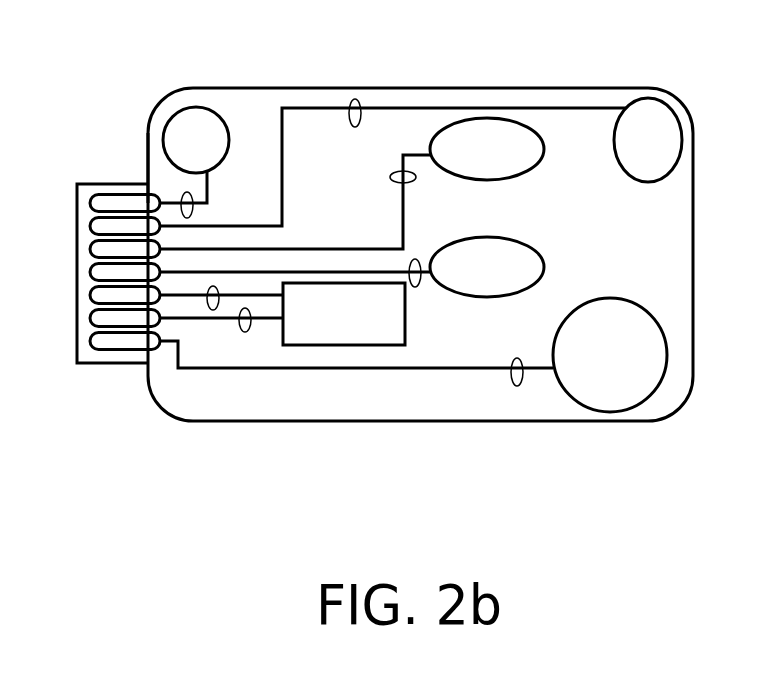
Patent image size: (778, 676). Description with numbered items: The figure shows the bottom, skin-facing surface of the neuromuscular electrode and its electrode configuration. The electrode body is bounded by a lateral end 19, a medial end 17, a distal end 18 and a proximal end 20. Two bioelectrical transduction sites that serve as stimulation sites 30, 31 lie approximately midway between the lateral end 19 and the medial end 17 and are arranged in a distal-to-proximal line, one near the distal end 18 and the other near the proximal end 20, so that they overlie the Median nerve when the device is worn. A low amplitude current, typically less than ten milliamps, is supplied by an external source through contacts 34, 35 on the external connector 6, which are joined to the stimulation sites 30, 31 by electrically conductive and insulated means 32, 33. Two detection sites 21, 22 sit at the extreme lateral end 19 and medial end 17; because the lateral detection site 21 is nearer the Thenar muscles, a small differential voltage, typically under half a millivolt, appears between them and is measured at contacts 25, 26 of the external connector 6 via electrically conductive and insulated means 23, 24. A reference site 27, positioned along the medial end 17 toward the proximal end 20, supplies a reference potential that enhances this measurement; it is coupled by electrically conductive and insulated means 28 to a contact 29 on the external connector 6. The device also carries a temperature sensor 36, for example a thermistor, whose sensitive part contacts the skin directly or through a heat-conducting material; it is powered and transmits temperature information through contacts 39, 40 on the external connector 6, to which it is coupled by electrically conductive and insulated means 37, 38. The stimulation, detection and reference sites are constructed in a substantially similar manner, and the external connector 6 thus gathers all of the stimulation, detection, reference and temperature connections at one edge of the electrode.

The external connector 6 is at (115, 363).
The medial end 17 is at (693, 280).
The distal end 18 is at (458, 88).
The lateral end 19 is at (148, 175).
The proximal end 20 is at (418, 422).
The lateral detection site 21 is at (178, 112).
The medial detection site 22 is at (682, 140).
The electrically conductive and insulated means 23 is at (183, 192).
The electrically conductive and insulated means 24 is at (353, 99).
The contact 25 is at (90, 200).
The contact 26 is at (90, 224).
The reference site 27 is at (667, 358).
The electrically conductive and insulated means 28 is at (520, 358).
The contact 29 is at (90, 343).
The stimulation site 30 is at (525, 177).
The stimulation site 31 is at (528, 240).
The electrically conductive and insulated means 32 is at (390, 177).
The electrically conductive and insulated means 33 is at (417, 287).
The contact 34 is at (90, 248).
The contact 35 is at (90, 272).
The temperature sensor 36 is at (325, 345).
The electrically conductive and insulated means 37 is at (245, 332).
The electrically conductive and insulated means 38 is at (211, 310).
The contact 39 is at (90, 295).
The contact 40 is at (90, 318).